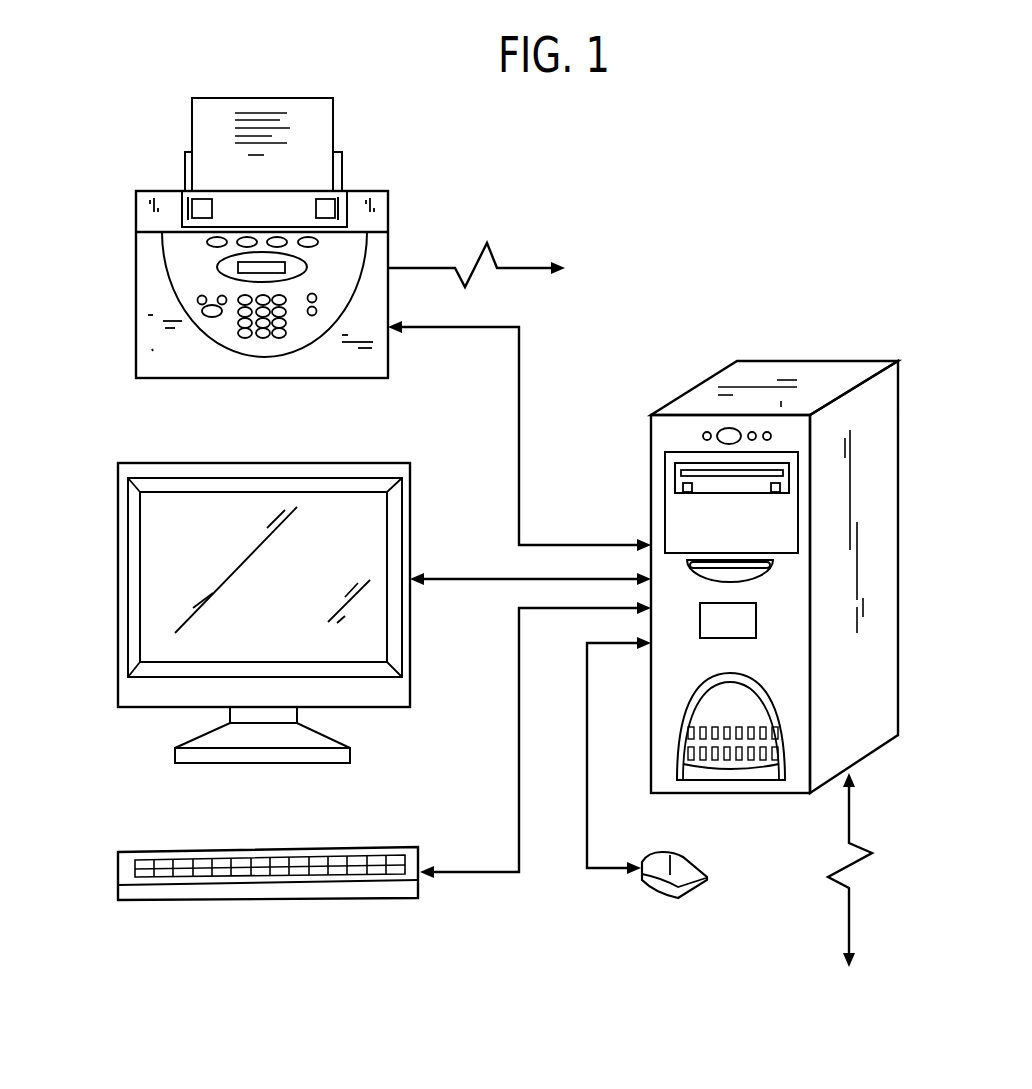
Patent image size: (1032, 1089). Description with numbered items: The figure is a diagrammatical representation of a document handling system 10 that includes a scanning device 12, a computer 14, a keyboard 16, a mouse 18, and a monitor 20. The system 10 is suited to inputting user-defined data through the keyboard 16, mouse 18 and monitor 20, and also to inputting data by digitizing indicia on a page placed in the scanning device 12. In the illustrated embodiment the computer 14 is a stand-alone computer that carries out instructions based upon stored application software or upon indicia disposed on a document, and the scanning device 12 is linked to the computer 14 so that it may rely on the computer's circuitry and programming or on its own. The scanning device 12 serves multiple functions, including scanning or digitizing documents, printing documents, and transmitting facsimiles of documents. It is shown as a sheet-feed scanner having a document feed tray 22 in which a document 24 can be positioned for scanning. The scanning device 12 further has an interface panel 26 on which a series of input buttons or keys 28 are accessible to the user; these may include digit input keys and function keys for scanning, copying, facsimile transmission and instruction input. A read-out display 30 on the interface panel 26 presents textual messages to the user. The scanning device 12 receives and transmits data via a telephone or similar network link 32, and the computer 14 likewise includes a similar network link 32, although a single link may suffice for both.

The document handling system 10 is at (742, 227).
The scanning device 12 is at (155, 193).
The computer 14 is at (845, 358).
The keyboard 16 is at (140, 902).
The mouse 18 is at (697, 885).
The monitor 20 is at (118, 525).
The document feed tray 22 is at (347, 180).
The document 24 is at (325, 140).
The interface panel 26 is at (157, 342).
The input buttons or keys 28 is at (278, 337).
The read-out display 30 is at (228, 268).
The network link 32 is at (495, 252).